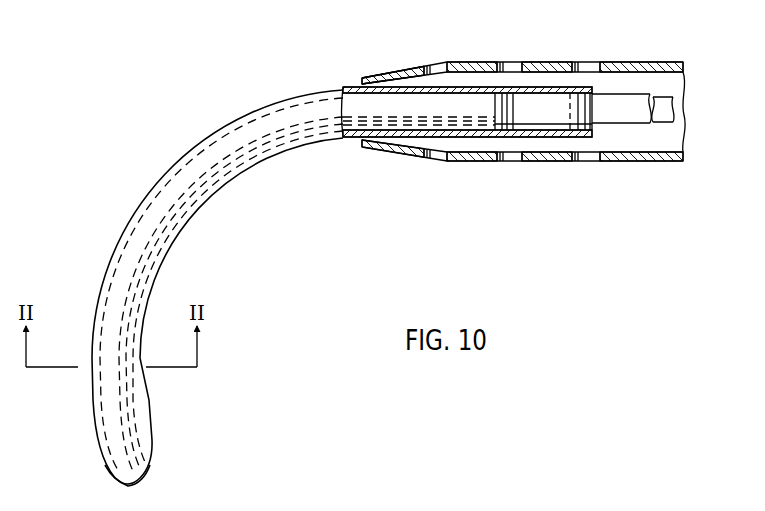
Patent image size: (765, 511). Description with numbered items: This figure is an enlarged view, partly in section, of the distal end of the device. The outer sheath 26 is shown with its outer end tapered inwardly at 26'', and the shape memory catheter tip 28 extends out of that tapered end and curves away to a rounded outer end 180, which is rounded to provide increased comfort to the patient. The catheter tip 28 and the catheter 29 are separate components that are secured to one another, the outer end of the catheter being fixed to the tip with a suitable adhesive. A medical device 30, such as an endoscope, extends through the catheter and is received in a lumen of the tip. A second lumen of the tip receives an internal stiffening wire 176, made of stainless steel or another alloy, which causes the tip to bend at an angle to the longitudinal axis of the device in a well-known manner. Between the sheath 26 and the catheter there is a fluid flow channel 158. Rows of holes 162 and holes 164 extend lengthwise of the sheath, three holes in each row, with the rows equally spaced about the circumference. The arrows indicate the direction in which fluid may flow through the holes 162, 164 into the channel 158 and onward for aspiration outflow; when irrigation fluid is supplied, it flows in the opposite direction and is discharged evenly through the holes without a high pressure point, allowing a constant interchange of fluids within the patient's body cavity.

The outer sheath 26 is at (538, 178).
The tapered outer end of sheath 26'' is at (372, 53).
The catheter tip 28 is at (187, 152).
The catheter 29 is at (617, 122).
The medical device 30 is at (677, 107).
The fluid flow channel 158 is at (627, 81).
The holes 162 is at (430, 165).
The holes 164 is at (430, 58).
The internal stiffening wire 176 is at (133, 409).
The rounded outer end 180 is at (133, 484).